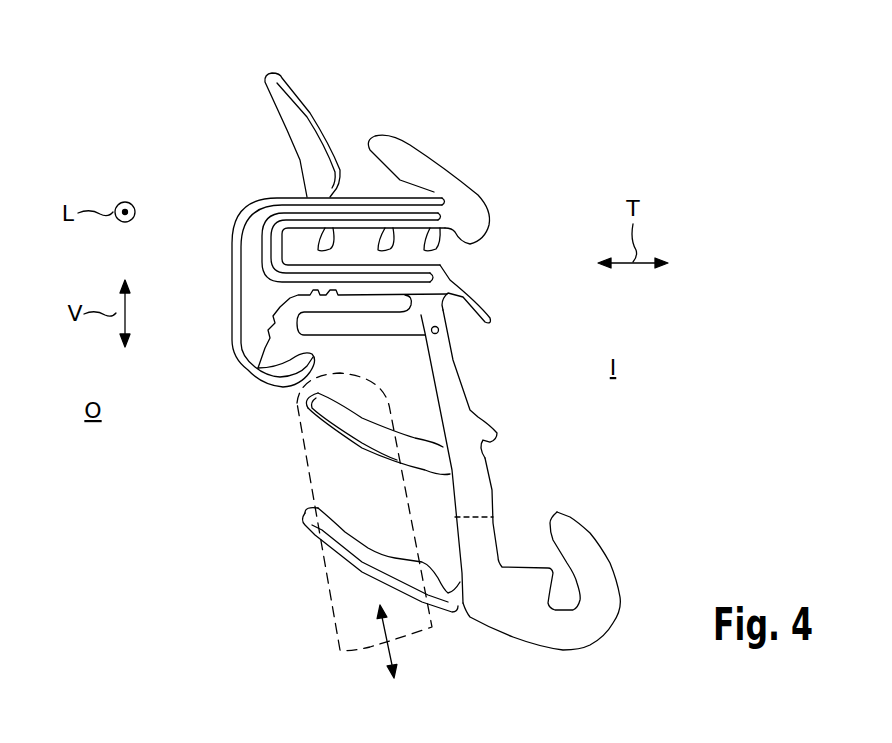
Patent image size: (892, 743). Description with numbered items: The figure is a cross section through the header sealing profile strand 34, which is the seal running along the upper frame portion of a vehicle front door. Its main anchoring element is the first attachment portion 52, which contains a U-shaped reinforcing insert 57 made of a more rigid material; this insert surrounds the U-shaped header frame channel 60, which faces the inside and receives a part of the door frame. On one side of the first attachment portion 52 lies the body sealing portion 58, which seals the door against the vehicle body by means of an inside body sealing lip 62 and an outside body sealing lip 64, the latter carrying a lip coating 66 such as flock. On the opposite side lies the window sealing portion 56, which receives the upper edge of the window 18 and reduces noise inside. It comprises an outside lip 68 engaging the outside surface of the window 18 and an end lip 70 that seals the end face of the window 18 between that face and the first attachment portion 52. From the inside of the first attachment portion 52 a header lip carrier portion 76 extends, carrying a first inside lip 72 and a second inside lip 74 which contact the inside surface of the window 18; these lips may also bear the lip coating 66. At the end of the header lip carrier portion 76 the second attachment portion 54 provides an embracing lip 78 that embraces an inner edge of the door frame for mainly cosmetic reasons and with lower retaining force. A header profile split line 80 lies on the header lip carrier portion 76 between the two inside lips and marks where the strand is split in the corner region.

The window 18 is at (348, 610).
The header sealing profile strand 34 is at (558, 143).
The first attachment portion 52 is at (222, 152).
The second attachment portion 54 is at (618, 525).
The window sealing portion 56 is at (220, 463).
The reinforcing insert 57 is at (270, 250).
The body sealing portion 58 is at (403, 112).
The header frame channel 60 is at (400, 249).
The inside body sealing lip 62 is at (438, 178).
The outside body sealing lip 64 is at (284, 97).
The lip coating 66 is at (309, 109).
The outside lip 68 is at (262, 377).
The end lip 70 is at (363, 328).
The first inside lip 72 is at (353, 540).
The second inside lip 74 is at (352, 428).
The header lip carrier portion 76 is at (477, 458).
The embracing lip 78 is at (602, 603).
The header profile split line 80 is at (470, 518).